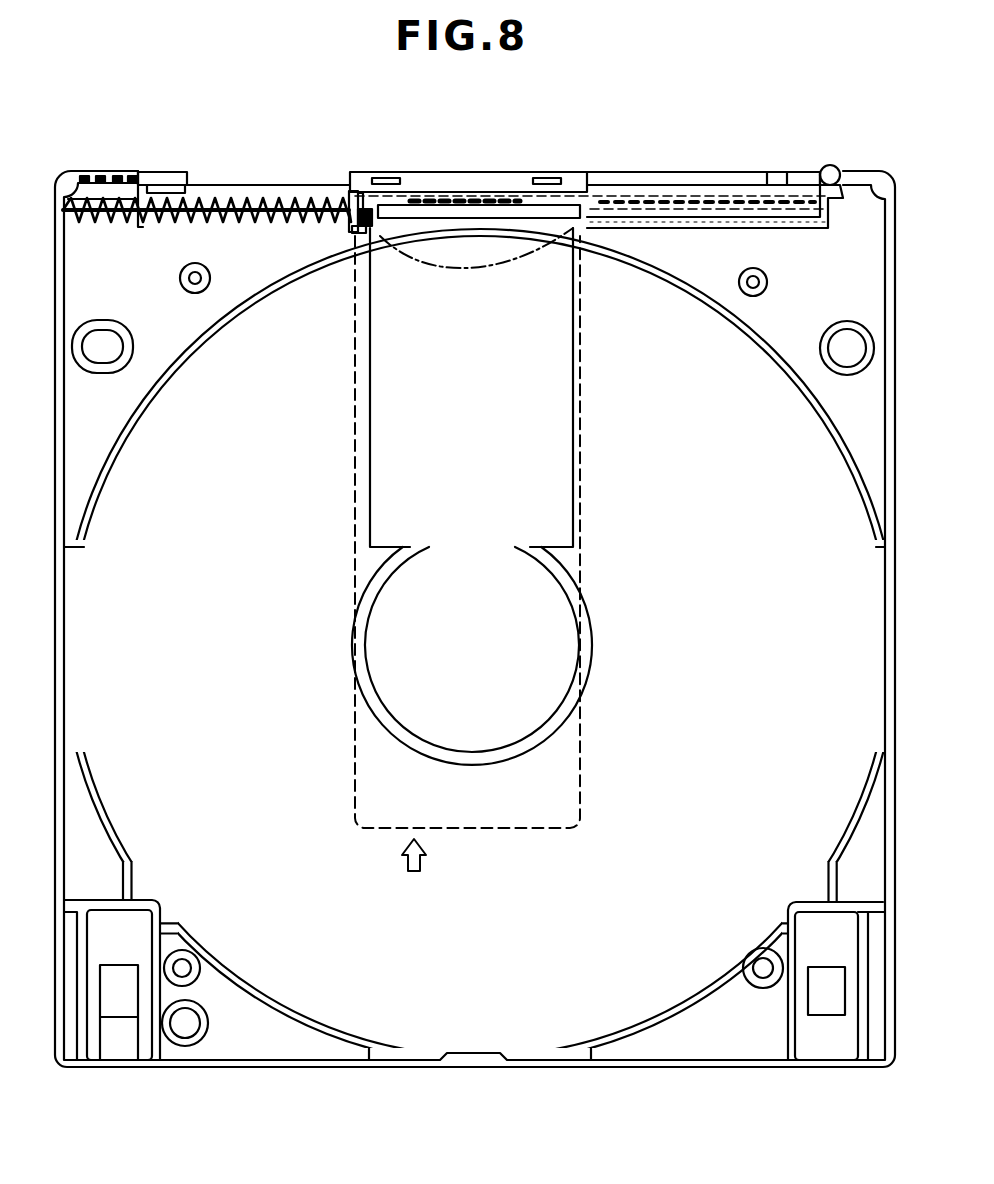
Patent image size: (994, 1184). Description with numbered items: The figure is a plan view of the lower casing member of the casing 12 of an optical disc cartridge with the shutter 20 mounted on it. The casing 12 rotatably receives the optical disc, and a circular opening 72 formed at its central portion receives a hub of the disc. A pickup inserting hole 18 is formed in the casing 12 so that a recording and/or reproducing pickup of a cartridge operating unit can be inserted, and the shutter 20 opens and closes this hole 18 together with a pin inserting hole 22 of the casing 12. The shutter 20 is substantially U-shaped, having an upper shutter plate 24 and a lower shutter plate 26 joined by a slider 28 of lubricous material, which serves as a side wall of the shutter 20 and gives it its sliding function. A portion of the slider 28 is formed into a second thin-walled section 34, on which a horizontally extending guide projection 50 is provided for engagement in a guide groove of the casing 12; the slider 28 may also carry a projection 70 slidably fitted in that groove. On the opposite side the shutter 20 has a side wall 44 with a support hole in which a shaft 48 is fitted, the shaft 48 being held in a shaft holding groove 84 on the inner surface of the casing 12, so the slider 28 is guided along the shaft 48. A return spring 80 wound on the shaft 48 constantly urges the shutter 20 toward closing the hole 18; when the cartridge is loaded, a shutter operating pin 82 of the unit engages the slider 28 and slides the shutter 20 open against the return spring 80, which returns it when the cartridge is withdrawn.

The casing 12 is at (57, 268).
The pickup inserting hole 18 is at (579, 413).
The shutter 20 is at (404, 873).
The pin inserting hole 22 is at (107, 321).
The upper shutter plate 24 is at (527, 246).
The lower shutter plate 26 is at (355, 720).
The slider 28 is at (178, 192).
The second thin-walled section 34 is at (773, 204).
The side wall 44 is at (349, 193).
The shaft 48 is at (245, 225).
The guide projection 50 is at (768, 184).
The projection 70 is at (479, 209).
The circular opening 72 is at (571, 692).
The return spring 80 is at (243, 197).
The shutter operating pin 82 is at (838, 168).
The shaft holding groove 84 is at (360, 231).